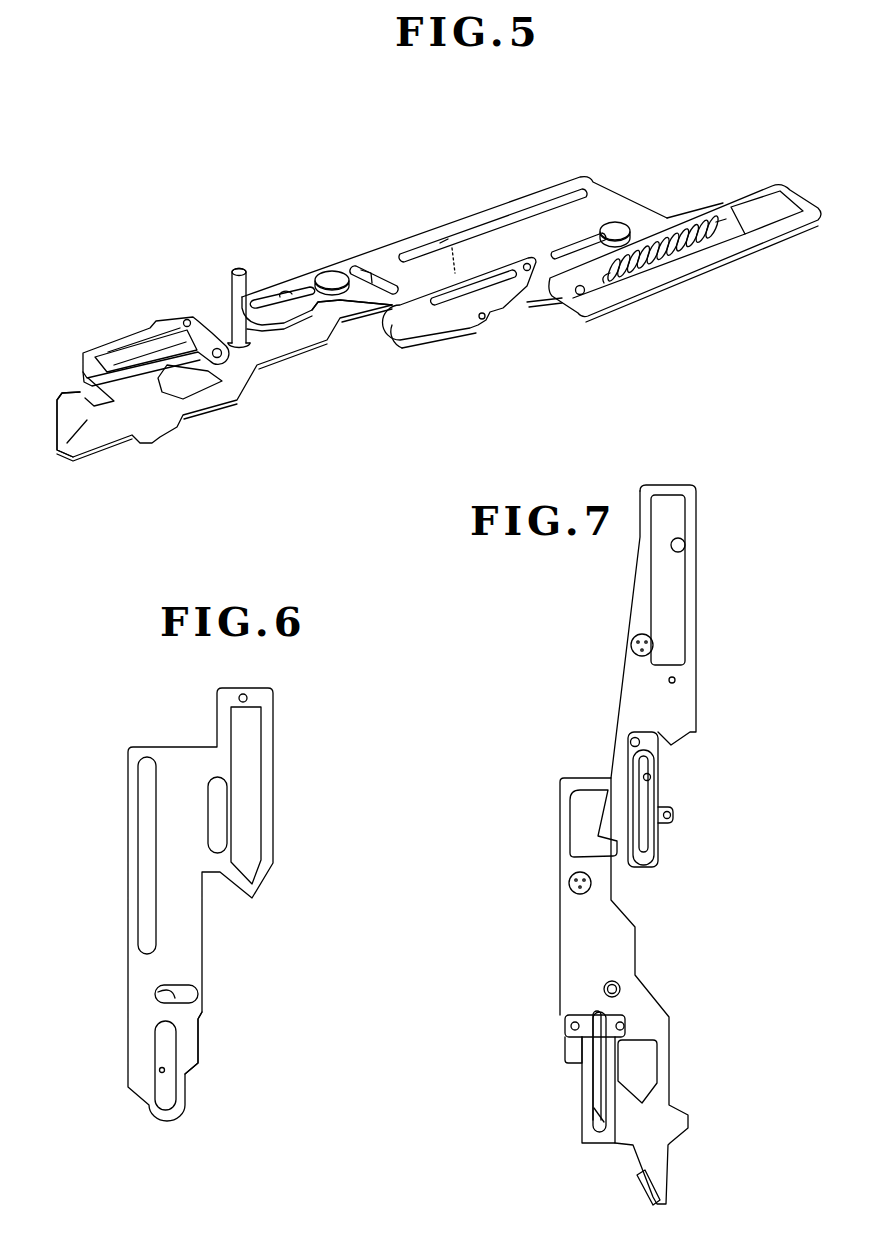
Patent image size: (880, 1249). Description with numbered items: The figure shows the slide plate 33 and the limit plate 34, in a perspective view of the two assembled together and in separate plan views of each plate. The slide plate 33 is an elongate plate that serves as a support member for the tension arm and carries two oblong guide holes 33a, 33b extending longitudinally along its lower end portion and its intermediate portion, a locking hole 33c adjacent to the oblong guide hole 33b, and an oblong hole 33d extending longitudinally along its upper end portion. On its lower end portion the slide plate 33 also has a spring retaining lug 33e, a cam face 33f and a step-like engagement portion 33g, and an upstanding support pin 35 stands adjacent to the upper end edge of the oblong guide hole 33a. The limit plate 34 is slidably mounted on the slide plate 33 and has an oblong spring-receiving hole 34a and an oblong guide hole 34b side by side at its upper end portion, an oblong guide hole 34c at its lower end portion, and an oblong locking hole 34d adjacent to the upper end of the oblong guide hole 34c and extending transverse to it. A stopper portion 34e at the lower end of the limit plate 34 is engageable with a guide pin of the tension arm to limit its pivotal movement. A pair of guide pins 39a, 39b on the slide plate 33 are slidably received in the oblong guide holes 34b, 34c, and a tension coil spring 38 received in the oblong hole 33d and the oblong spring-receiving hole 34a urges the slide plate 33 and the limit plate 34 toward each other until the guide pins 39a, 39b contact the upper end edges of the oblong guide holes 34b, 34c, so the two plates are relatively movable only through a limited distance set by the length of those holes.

In FIG. 5, the slide plate 33 is at (152, 425).
In FIG. 7, the slide plate 33 is at (698, 714).
In FIG. 5, the oblong guide hole 33a is at (178, 325).
In FIG. 7, the oblong guide hole 33a is at (600, 1112).
In FIG. 5, the oblong guide hole 33b is at (503, 285).
In FIG. 7, the oblong guide hole 33b is at (650, 778).
In FIG. 7, the locking hole 33c is at (578, 822).
In FIG. 7, the oblong hole 33d is at (683, 544).
In FIG. 5, the spring retaining lug 33e is at (70, 398).
In FIG. 7, the spring retaining lug 33e is at (654, 1202).
In FIG. 5, the cam face 33f is at (183, 420).
In FIG. 7, the cam face 33f is at (675, 1082).
In FIG. 7, the step-like engagement portion 33g is at (569, 1075).
In FIG. 5, the limit plate 34 is at (605, 203).
In FIG. 6, the limit plate 34 is at (175, 751).
In FIG. 5, the oblong spring-receiving hole 34a is at (580, 295).
In FIG. 6, the oblong spring-receiving hole 34a is at (258, 751).
In FIG. 5, the oblong guide hole 34b is at (581, 247).
In FIG. 6, the oblong guide hole 34b is at (226, 829).
In FIG. 5, the oblong guide hole 34c is at (273, 293).
In FIG. 6, the oblong guide hole 34c is at (163, 1072).
In FIG. 5, the oblong locking hole 34d is at (368, 268).
In FIG. 6, the oblong locking hole 34d is at (165, 994).
In FIG. 5, the stopper portion 34e is at (357, 298).
In FIG. 6, the stopper portion 34e is at (191, 1045).
In FIG. 5, the support pin 35 is at (233, 280).
In FIG. 7, the support pin 35 is at (620, 988).
In FIG. 5, the tension coil spring 38 is at (688, 248).
In FIG. 5, the guide pin 39a is at (622, 224).
In FIG. 7, the guide pin 39a is at (636, 640).
In FIG. 5, the guide pin 39b is at (333, 278).
In FIG. 7, the guide pin 39b is at (570, 883).